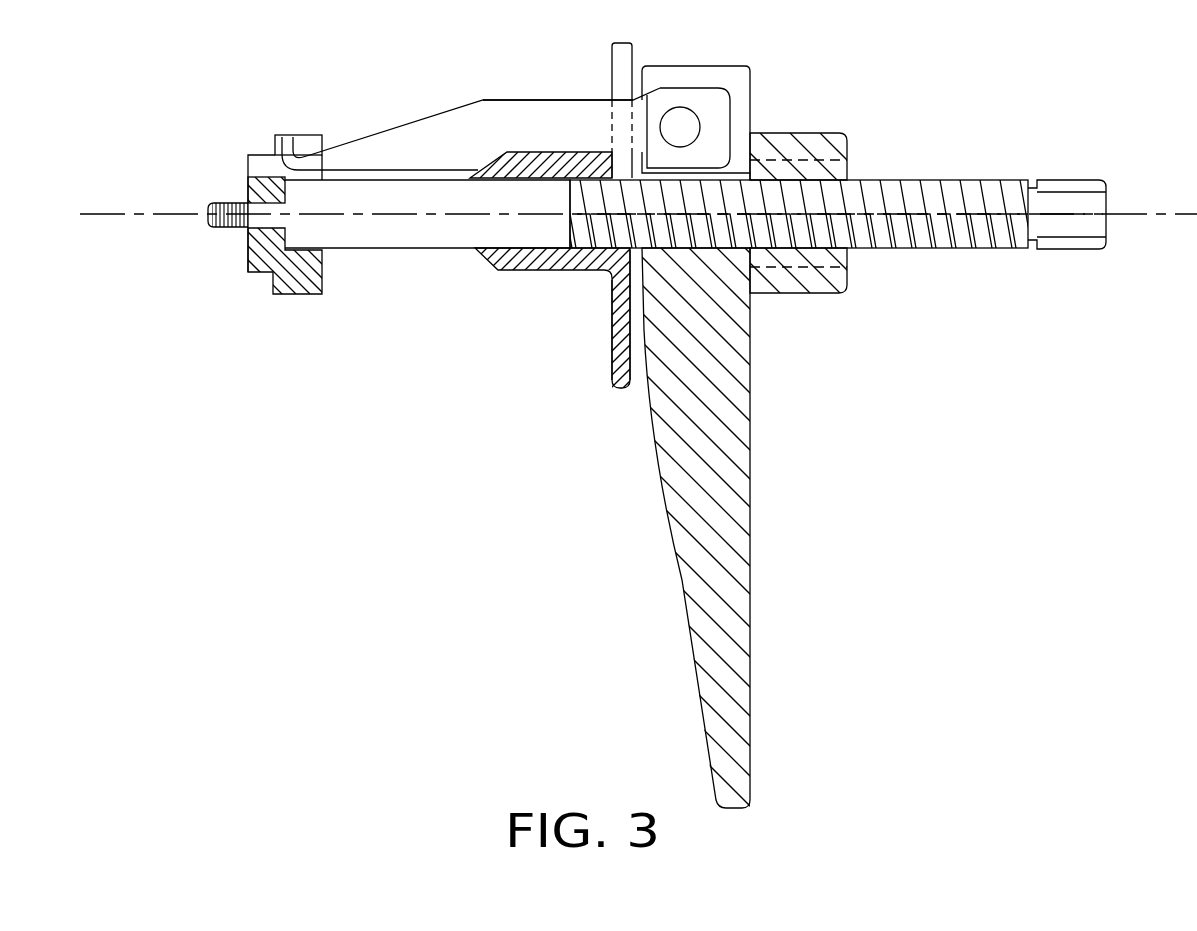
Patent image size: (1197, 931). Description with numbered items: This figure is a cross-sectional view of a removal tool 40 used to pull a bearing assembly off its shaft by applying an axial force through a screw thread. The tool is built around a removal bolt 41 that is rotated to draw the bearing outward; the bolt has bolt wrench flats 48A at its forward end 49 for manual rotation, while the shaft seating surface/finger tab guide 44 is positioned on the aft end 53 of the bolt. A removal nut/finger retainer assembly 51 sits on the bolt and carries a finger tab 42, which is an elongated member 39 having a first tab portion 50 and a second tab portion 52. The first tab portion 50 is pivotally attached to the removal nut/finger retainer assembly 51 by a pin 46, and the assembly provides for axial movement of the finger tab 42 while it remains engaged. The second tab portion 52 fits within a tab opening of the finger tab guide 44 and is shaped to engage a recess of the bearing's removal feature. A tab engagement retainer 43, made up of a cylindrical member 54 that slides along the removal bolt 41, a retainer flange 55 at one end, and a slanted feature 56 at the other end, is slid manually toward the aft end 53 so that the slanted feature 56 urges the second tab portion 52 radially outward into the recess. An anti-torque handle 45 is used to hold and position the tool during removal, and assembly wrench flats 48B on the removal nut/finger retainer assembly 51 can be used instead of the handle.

The elongated member 39 is at (537, 118).
The removal tool 40 is at (300, 83).
The removal bolt 41 is at (883, 192).
The finger tab 42 is at (425, 133).
The tab engagement retainer 43 is at (613, 383).
The shaft seating surface/finger tab guide 44 is at (288, 278).
The anti-torque handle 45 is at (735, 420).
The pin 46 is at (683, 127).
The bolt wrench flats 48A is at (1072, 222).
The assembly wrench flats 48B is at (803, 293).
The forward end 49 is at (1085, 180).
The first tab portion 50 is at (650, 106).
The removal nut/finger retainer assembly 51 is at (773, 117).
The second tab portion 52 is at (303, 132).
The aft end 53 is at (358, 235).
The cylindrical member 54 is at (540, 262).
The retainer flange 55 is at (617, 315).
The slanted feature 56 is at (470, 252).